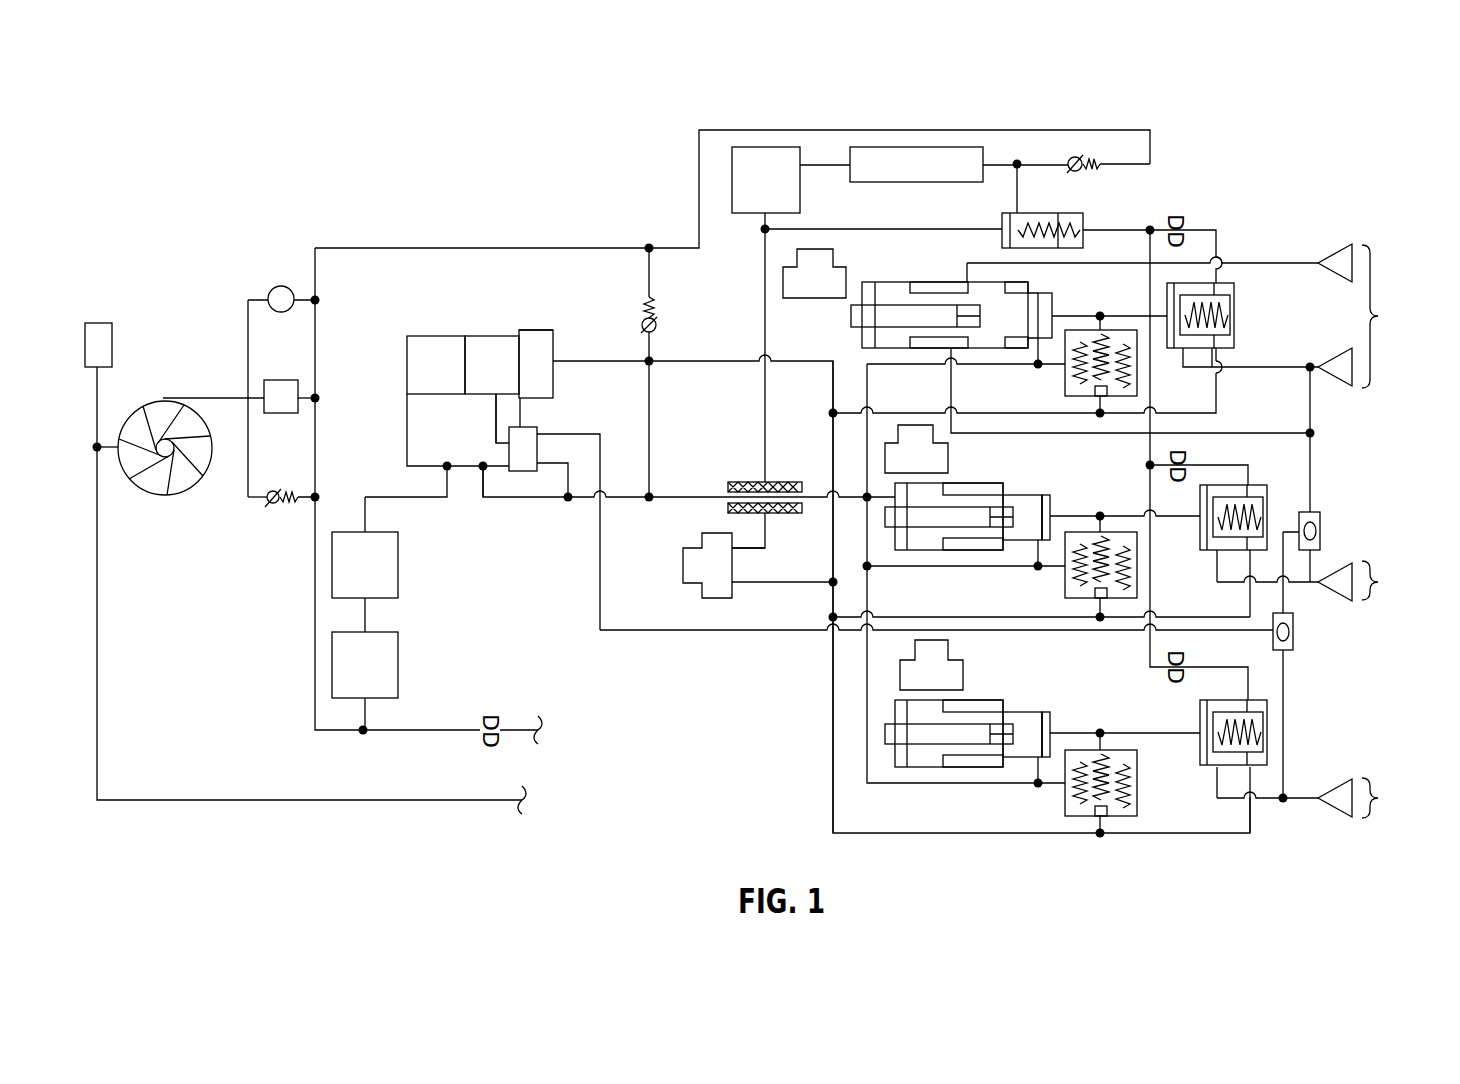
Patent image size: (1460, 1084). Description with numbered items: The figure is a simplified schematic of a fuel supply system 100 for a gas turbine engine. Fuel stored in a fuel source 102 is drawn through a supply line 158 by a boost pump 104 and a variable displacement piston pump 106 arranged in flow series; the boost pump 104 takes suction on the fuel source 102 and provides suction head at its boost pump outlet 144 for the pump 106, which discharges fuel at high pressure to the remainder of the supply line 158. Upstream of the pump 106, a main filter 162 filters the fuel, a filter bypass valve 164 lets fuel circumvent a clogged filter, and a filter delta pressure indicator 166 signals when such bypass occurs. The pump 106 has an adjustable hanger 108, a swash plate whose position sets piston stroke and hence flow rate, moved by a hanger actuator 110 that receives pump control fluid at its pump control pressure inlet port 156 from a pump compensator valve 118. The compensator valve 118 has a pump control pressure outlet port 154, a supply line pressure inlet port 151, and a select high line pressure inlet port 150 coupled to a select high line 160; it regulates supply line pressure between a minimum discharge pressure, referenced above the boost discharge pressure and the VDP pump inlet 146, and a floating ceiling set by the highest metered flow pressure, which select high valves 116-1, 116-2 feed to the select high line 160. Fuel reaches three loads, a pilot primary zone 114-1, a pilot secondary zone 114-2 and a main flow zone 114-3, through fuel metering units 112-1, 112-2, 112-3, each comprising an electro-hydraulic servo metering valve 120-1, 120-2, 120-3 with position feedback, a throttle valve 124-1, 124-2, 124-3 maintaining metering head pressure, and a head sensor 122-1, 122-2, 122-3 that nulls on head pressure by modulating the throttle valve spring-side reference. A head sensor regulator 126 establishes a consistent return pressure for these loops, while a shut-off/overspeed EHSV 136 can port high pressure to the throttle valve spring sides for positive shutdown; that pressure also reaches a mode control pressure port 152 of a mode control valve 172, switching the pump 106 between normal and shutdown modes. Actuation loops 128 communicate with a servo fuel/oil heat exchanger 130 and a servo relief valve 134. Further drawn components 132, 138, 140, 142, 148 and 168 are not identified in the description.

The fuel supply system 100 is at (230, 120).
The fuel source 102 is at (97, 323).
The boost pump 104 is at (170, 495).
The variable displacement piston pump 106 is at (430, 441).
The adjustable hanger 108 is at (412, 378).
The hanger actuator 110 is at (467, 378).
The fuel metering unit 112-1 is at (950, 274).
The fuel metering unit 112-2 is at (1026, 468).
The fuel metering unit 112-3 is at (1022, 696).
The pilot primary zone 114-1 is at (1389, 316).
The pilot secondary zone 114-2 is at (1389, 581).
The main flow zone 114-3 is at (1388, 798).
The select high valve 116-1 is at (1320, 532).
The select high valve 116-2 is at (1293, 640).
The pump compensator valve 118 is at (525, 427).
The metering valve 120-1 is at (862, 337).
The metering valve 120-2 is at (1049, 504).
The metering valve 120-3 is at (1049, 728).
The head sensor 122-1 is at (1065, 373).
The head sensor 122-2 is at (1065, 571).
The head sensor 122-3 is at (1065, 793).
The throttle valve 124-1 is at (1233, 323).
The throttle valve 124-2 is at (1267, 497).
The throttle valve 124-3 is at (1267, 733).
The head sensor regulator 126 is at (1044, 213).
The actuation loop 128 is at (892, 177).
The servo fuel/oil heat exchanger 130 is at (742, 194).
The relief valve 132 is at (1101, 168).
The servo relief valve 134 is at (658, 330).
The shut-off/overspeed EHSV 136 is at (683, 565).
The power source 138 is at (341, 576).
The battery 140 is at (341, 677).
The pump inlet line 142 is at (100, 447).
The boost pump outlet 144 is at (180, 397).
The VDP pump inlet 146 is at (447, 470).
The second control line 148 is at (481, 470).
The select high line pressure inlet port 150 is at (537, 440).
The supply line pressure inlet port 151 is at (537, 463).
The mode control pressure port 152 is at (553, 360).
The pump control pressure outlet port 154 is at (522, 472).
The pump control pressure inlet port 156 is at (496, 398).
The supply line 158 is at (707, 495).
The select high line 160 is at (708, 633).
The main filter 162 is at (280, 380).
The filter bypass valve 164 is at (270, 491).
The filter delta pressure indicator 166 is at (280, 287).
The supply line 168 is at (833, 745).
The mode control valve 172 is at (535, 330).